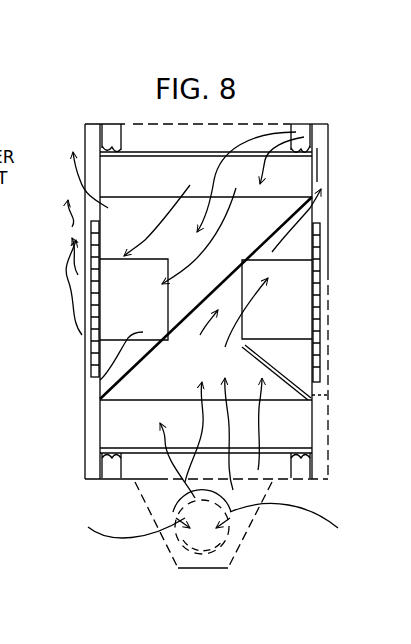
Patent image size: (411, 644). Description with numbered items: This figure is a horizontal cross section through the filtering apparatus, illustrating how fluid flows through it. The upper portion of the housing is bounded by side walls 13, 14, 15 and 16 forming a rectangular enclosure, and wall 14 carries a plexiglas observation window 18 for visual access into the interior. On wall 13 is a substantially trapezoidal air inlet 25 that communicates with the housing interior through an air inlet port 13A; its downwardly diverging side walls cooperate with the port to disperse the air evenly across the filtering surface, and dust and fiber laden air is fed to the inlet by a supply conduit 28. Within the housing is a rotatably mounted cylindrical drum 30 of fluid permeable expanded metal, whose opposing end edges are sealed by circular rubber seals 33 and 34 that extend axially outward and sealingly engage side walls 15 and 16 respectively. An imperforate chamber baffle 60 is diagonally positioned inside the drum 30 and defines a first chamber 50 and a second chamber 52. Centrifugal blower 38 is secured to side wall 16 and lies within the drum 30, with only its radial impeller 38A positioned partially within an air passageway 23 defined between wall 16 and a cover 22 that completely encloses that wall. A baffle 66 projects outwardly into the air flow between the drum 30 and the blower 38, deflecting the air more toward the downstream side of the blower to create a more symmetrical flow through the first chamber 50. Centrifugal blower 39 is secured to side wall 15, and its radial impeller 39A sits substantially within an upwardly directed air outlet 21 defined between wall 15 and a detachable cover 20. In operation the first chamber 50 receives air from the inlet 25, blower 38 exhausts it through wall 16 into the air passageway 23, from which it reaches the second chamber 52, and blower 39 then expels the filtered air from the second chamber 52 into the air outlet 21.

The side wall 13 is at (130, 484).
The air inlet port 13A is at (262, 462).
The side wall 14 is at (130, 124).
The side wall 15 is at (100, 171).
The side wall 16 is at (318, 186).
The plexiglas observation window 18 is at (145, 124).
The cover 20 is at (85, 455).
The air outlet 21 is at (92, 408).
The cover 22 is at (328, 300).
The air passageway 23 is at (318, 398).
The air inlet 25 is at (192, 572).
The supply conduit 28 is at (218, 542).
The cylindrical drum 30 is at (152, 405).
The circular rubber seal 33 is at (108, 140).
The circular rubber seal 34 is at (302, 148).
The centrifugal blower 38 is at (292, 331).
The radial impeller 38A is at (320, 266).
The centrifugal blower 39 is at (135, 293).
The radial impeller 39A is at (93, 233).
The first chamber 50 is at (218, 370).
The second chamber 52 is at (263, 226).
The chamber baffle 60 is at (208, 288).
The baffle 66 is at (310, 373).